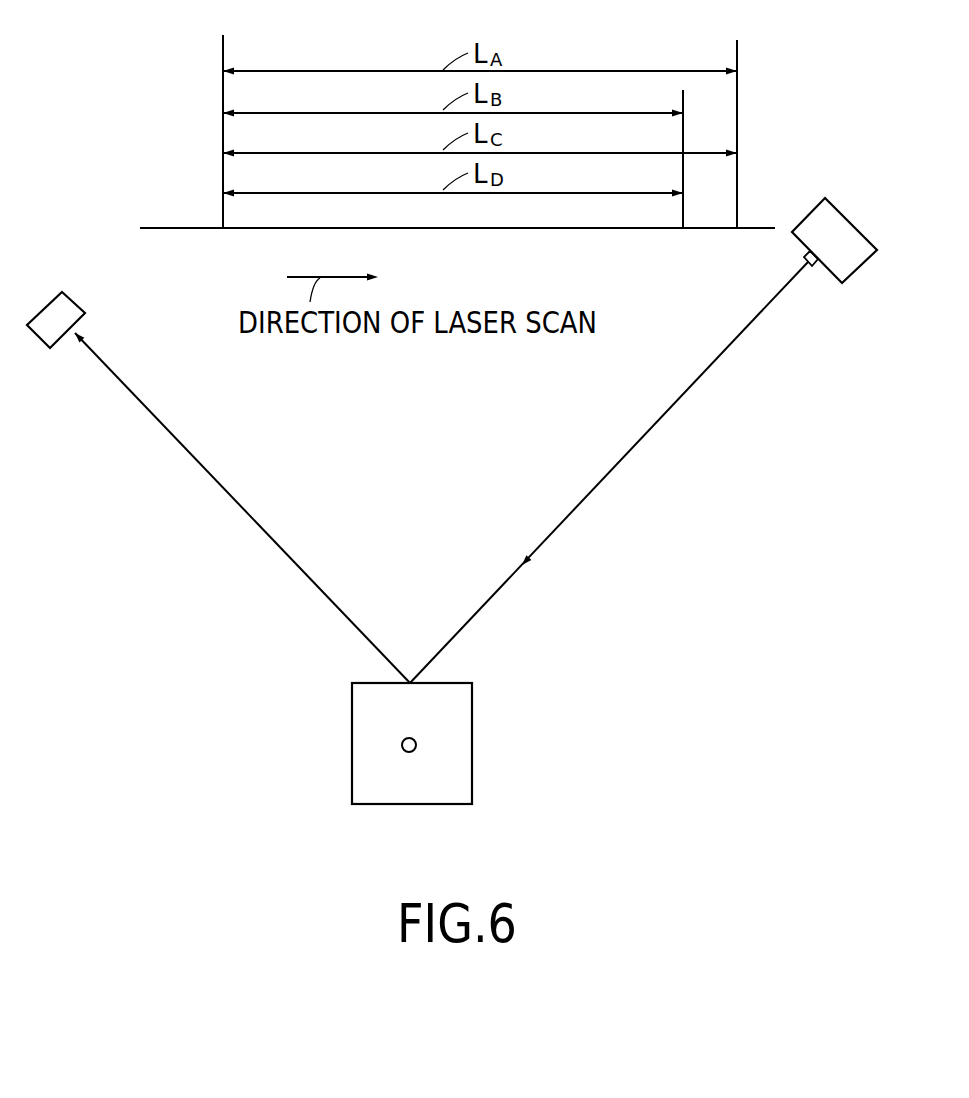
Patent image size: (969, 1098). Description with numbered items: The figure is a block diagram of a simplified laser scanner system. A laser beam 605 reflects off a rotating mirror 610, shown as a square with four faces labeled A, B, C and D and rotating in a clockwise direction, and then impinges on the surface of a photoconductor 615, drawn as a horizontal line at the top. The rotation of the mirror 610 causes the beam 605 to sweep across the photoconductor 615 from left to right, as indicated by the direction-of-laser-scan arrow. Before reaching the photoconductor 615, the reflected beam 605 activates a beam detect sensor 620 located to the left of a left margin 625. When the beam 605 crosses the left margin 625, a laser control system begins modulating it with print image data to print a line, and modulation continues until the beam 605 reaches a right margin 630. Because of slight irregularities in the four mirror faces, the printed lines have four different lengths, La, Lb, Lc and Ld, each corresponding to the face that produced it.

The laser beam 605 is at (263, 533).
The rotating mirror 610 is at (453, 767).
The photoconductor 615 is at (176, 230).
The beam detect sensor 620 is at (46, 331).
The left margin 625 is at (214, 107).
The right margin 630 is at (748, 107).